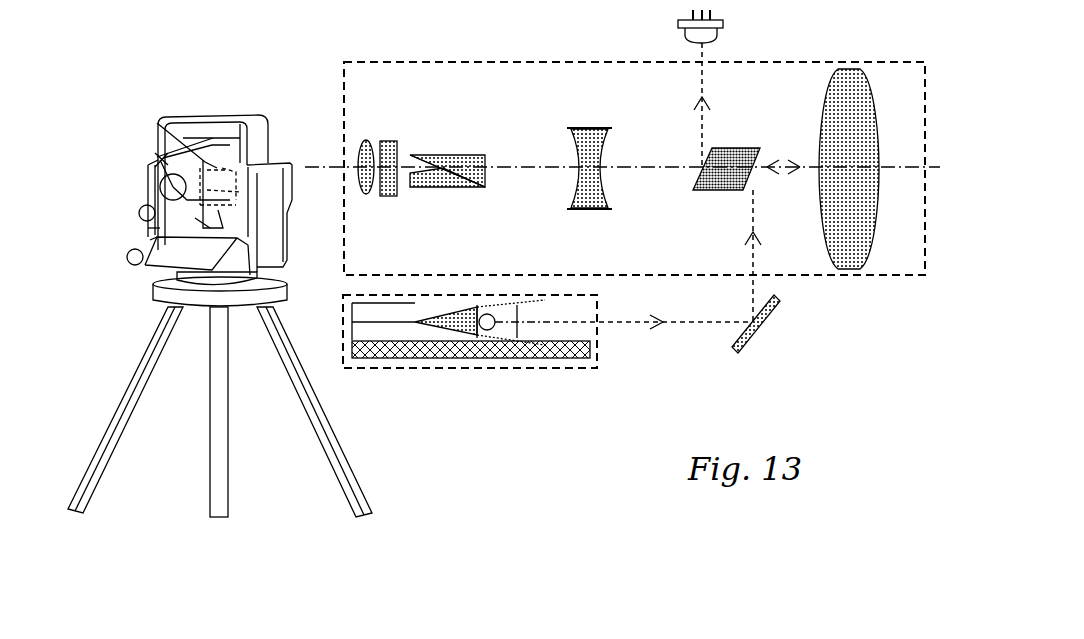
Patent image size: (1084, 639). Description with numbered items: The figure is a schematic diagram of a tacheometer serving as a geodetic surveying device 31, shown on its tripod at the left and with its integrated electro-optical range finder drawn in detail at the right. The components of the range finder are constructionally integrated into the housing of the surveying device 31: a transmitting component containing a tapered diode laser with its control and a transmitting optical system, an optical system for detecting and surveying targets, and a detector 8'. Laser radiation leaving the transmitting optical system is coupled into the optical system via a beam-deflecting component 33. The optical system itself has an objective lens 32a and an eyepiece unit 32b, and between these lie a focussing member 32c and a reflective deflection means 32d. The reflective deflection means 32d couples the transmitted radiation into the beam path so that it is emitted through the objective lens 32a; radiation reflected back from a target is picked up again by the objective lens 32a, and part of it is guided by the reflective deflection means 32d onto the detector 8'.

The geodetic surveying device 31 is at (188, 91).
The detector 8' is at (146, 158).
The objective lens 32a is at (857, 78).
The eyepiece unit 32b is at (457, 157).
The focussing member 32c is at (587, 135).
The reflective deflection means 32d is at (713, 185).
The beam-deflecting component 33 is at (753, 332).